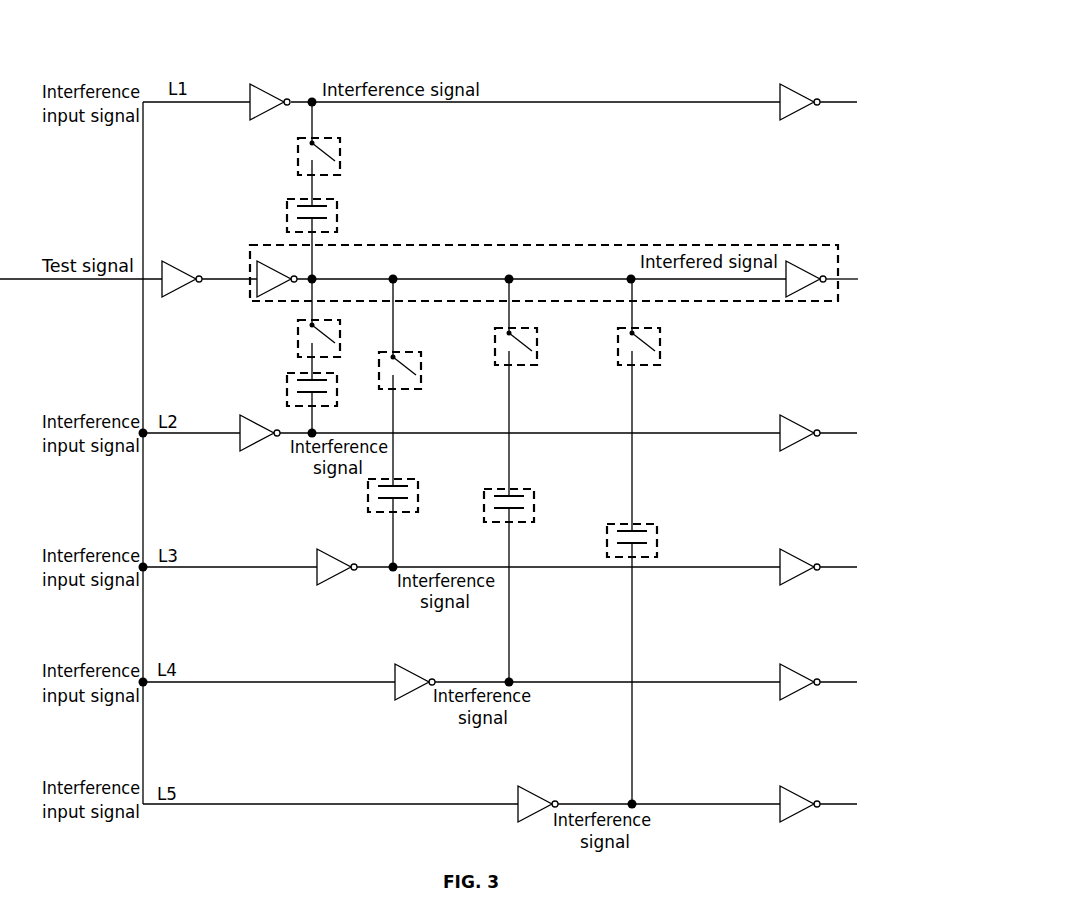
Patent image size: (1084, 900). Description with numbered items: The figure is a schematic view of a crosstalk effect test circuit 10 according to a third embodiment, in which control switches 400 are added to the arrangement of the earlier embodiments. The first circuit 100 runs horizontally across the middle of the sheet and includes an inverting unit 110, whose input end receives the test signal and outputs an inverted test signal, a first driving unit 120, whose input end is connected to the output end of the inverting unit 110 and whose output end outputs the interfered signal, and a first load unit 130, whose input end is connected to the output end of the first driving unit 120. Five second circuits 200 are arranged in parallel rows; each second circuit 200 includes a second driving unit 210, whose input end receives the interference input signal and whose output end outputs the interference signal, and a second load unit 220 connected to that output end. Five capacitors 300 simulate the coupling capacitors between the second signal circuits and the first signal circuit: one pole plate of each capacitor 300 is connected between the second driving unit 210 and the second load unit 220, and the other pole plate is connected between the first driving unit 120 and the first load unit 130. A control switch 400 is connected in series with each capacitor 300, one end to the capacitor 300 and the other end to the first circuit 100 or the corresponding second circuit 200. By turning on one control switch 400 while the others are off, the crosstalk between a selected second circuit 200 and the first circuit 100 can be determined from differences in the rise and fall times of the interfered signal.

The crosstalk effect test circuit 10 is at (505, 21).
The first circuit 100 is at (848, 278).
The inverting unit 110 is at (164, 263).
The first driving unit 120 is at (266, 296).
The first load unit 130 is at (795, 266).
The second circuit 200 is at (840, 102).
The second driving unit 210 is at (257, 92).
The second load unit 220 is at (783, 89).
The capacitor 300 is at (327, 200).
The control switch 400 is at (300, 167).